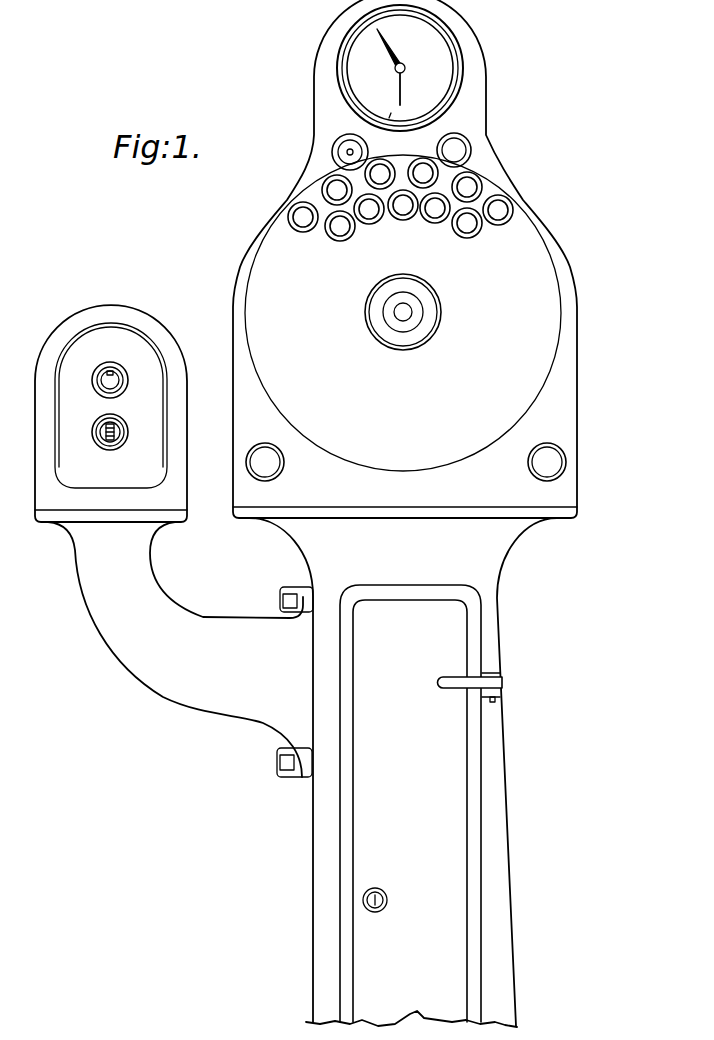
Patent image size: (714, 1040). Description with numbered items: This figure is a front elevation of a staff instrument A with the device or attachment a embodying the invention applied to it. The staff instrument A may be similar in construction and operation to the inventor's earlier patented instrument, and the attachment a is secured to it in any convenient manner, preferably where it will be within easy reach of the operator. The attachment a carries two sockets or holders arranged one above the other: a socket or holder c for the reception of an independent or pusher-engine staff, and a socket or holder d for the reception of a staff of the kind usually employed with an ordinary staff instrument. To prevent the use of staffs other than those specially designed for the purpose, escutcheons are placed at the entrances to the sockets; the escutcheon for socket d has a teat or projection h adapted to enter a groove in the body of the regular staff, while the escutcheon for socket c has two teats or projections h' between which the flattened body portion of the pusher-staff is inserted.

The staff instrument A is at (312, 513).
The device or attachment a is at (111, 397).
The socket or holder for regular staff d is at (96, 383).
The teat or projection h is at (117, 359).
The socket or holder for pusher-engine staff c is at (101, 435).
The teats or projections h' is at (129, 427).